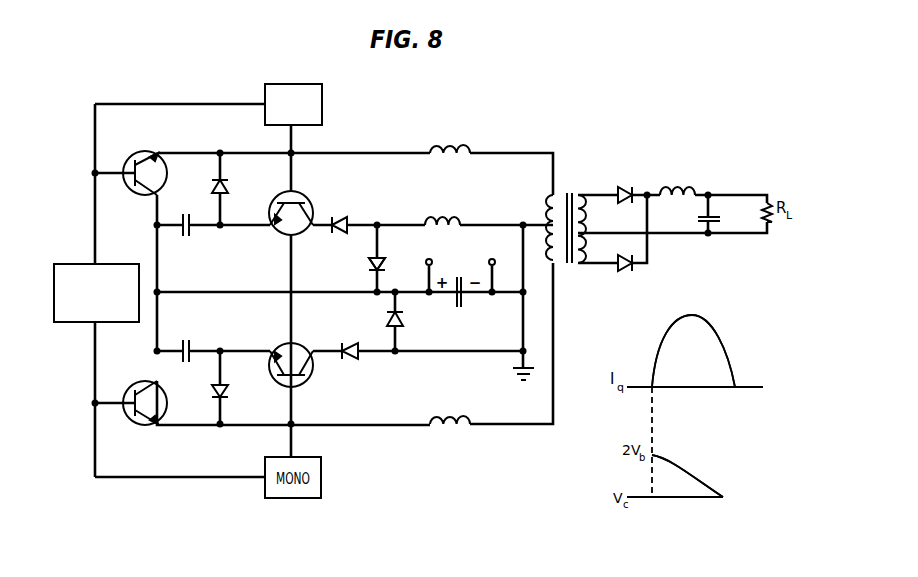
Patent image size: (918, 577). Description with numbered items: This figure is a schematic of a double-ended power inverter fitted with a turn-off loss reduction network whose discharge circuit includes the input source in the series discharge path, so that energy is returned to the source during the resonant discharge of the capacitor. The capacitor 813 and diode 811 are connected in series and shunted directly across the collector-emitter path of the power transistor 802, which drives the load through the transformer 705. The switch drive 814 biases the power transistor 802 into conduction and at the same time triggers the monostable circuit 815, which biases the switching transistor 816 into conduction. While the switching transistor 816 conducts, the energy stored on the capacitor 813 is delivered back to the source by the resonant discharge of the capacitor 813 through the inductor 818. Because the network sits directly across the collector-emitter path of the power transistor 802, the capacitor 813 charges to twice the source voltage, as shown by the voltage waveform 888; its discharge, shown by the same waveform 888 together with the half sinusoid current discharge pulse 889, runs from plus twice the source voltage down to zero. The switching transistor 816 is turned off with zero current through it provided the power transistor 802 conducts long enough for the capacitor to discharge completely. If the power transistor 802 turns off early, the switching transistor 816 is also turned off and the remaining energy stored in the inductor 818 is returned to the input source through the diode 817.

The power transistor 802 is at (144, 162).
The diode 811 is at (229, 188).
The capacitor 813 is at (186, 238).
The switch drive 814 is at (72, 306).
The monostable circuit 815 is at (322, 112).
The switching transistor 816 is at (291, 226).
The diode 817 is at (364, 267).
The inductor 818 is at (442, 208).
The transformer 705 is at (566, 216).
The voltage waveform 888 is at (688, 473).
The half sinusoid current discharge pulse 889 is at (722, 338).